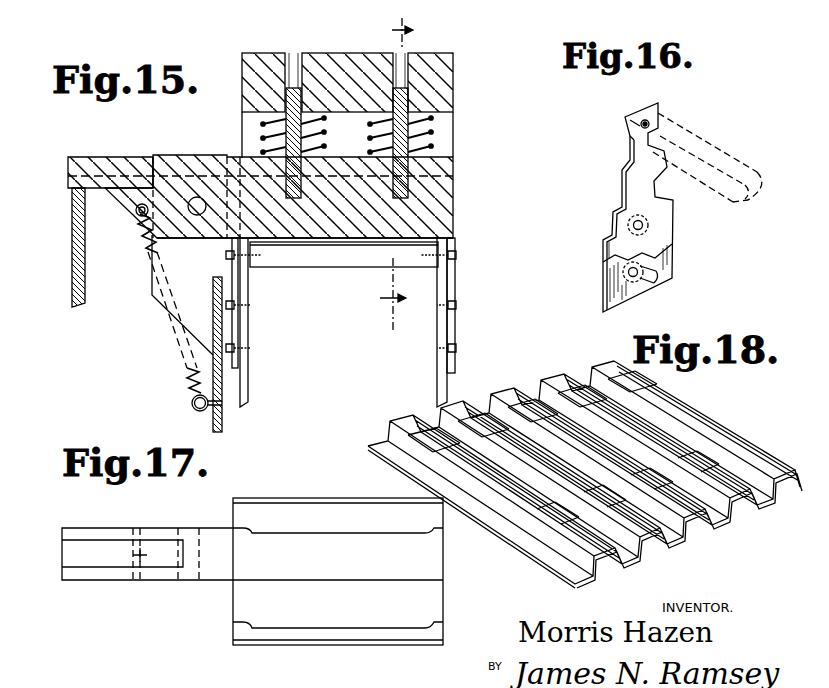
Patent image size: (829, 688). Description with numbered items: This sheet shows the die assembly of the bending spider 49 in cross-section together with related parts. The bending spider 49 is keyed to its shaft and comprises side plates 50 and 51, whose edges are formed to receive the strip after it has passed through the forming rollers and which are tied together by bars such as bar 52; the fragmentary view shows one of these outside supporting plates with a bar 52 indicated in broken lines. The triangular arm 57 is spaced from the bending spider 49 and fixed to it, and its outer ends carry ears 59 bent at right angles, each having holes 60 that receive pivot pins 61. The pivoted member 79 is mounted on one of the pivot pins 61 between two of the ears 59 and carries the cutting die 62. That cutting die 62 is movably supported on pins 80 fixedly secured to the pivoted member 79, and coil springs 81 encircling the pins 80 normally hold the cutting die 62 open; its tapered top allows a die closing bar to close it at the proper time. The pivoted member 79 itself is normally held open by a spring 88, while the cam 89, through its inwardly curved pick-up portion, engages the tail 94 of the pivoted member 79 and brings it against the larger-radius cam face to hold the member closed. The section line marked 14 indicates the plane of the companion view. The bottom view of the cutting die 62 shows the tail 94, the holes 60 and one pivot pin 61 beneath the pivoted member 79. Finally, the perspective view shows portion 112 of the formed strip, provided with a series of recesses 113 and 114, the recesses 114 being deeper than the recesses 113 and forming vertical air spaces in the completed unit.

In FIG. 15, the section line 14- 14 is at (413, 174).
In FIG. 15, the bending spider 49 is at (240, 332).
In FIG. 16, the bending spider 49 is at (657, 210).
In FIG. 15, the side plate 50 is at (243, 385).
In FIG. 15, the side plate 51 is at (437, 370).
In FIG. 16, the bar 52 is at (723, 162).
In FIG. 15, the triangular arm 57 is at (223, 425).
In FIG. 15, the ear 59 is at (174, 286).
In FIG. 17, the hole 60 is at (142, 535).
In FIG. 15, the pivot pin 61 is at (197, 197).
In FIG. 17, the pivot pin 61 is at (151, 555).
In FIG. 15, the cutting die 62 is at (455, 90).
In FIG. 17, the cutting die 62 is at (338, 571).
In FIG. 15, the pivoted member 79 is at (453, 197).
In FIG. 17, the pivoted member 79 is at (338, 571).
In FIG. 15, the pin 80 is at (370, 137).
In FIG. 15, the coil spring 81 is at (262, 137).
In FIG. 15, the spring 88 is at (185, 366).
In FIG. 15, the cam 89 is at (85, 287).
In FIG. 15, the tail 94 is at (90, 163).
In FIG. 17, the tail 94 is at (72, 538).
In FIG. 18, the portion of formed strip 112 is at (533, 397).
In FIG. 18, the recess 113 is at (617, 403).
In FIG. 18, the recess 114 is at (690, 446).